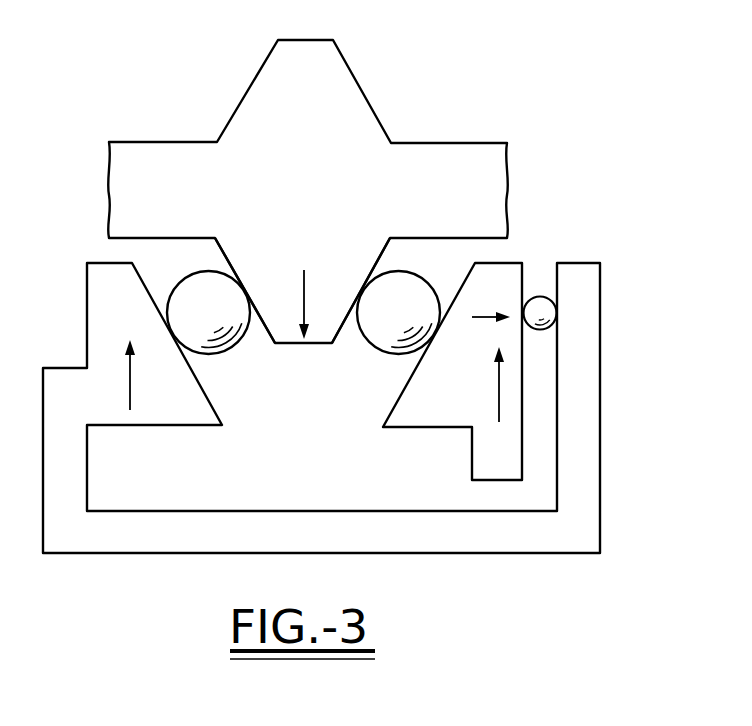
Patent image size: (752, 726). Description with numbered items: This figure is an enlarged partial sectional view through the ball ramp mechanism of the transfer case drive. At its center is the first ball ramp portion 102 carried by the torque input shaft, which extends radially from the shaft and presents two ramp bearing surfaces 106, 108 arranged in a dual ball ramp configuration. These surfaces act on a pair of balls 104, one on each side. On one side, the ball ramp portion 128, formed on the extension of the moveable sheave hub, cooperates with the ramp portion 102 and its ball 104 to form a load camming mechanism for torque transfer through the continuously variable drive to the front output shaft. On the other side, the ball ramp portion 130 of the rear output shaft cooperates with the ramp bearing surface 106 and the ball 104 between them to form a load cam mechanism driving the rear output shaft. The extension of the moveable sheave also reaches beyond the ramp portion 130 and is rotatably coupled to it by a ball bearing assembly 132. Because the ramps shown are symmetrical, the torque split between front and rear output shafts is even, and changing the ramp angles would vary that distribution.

The first ball ramp portion 102 is at (297, 345).
The ball bearings 104 is at (225, 288).
The ramp bearing surface 106 is at (343, 333).
The ramp bearing surface 108 is at (271, 332).
The ball ramp portion 128 is at (226, 414).
The ball ramp portion 130 is at (392, 405).
The ball bearing assembly 132 is at (550, 314).